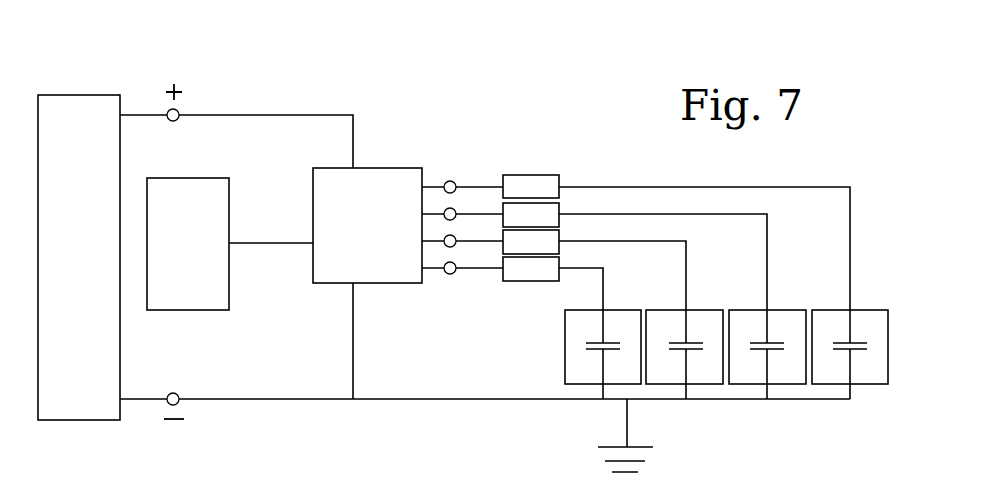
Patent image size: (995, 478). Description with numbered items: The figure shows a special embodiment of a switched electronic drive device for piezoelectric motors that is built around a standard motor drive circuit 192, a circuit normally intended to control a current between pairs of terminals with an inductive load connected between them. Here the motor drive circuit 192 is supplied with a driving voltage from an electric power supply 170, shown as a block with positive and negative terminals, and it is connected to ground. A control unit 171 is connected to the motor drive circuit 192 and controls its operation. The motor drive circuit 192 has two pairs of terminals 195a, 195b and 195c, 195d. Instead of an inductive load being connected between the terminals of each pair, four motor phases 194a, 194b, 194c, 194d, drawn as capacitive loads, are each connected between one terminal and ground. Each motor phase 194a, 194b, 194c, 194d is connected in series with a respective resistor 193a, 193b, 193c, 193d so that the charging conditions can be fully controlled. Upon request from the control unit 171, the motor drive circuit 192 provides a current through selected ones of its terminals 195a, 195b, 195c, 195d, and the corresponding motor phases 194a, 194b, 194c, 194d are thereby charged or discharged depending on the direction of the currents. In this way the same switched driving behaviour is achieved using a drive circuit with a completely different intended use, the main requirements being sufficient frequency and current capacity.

The electric power supply 170 is at (82, 130).
The control unit 171 is at (188, 207).
The standard motor drive circuit 192 is at (322, 180).
The resistor 193a is at (510, 181).
The resistor 193b is at (552, 210).
The resistor 193c is at (547, 280).
The resistor 193d is at (510, 275).
The motor phase 194a is at (872, 374).
The motor phase 194b is at (790, 375).
The motor phase 194c is at (708, 372).
The motor phase 194d is at (572, 370).
The terminal 195a is at (445, 183).
The terminal 195b is at (452, 210).
The terminal 195c is at (446, 247).
The terminal 195d is at (447, 274).